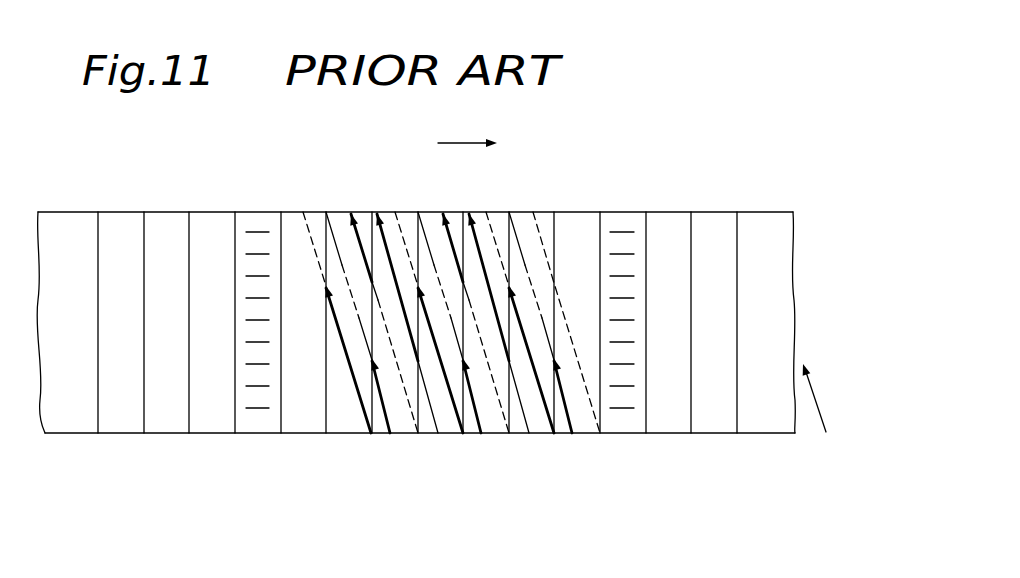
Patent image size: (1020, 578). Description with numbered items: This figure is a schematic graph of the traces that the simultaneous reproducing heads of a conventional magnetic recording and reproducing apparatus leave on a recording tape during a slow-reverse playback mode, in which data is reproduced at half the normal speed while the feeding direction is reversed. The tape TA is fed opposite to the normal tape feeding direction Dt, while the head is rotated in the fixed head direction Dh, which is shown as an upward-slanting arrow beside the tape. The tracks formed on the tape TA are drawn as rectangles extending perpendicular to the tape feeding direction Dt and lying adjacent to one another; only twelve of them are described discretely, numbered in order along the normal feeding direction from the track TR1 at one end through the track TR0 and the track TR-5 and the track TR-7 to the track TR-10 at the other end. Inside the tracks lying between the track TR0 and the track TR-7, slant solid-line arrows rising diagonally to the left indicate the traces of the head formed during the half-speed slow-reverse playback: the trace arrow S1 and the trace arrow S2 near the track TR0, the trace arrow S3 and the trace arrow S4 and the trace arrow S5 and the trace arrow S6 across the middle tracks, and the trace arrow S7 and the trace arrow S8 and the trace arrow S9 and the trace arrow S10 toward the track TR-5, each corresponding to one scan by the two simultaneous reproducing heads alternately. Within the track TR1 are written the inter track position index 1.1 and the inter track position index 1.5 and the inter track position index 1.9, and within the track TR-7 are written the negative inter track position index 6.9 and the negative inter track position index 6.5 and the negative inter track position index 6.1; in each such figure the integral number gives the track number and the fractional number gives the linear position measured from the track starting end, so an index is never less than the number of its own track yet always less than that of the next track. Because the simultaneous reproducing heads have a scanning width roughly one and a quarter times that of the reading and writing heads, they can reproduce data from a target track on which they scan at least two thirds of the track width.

The tape TA is at (743, 205).
The tape feeding direction Dt is at (467, 126).
The head rotation direction Dh is at (831, 398).
The track -10 TR-10 is at (117, 434).
The track -7 TR-7 is at (252, 432).
The track -5 TR-5 is at (318, 434).
The track 0 TR0 is at (573, 235).
The track 1 TR1 is at (626, 410).
The inter track position index 6.1 is at (257, 224).
The inter track position index 6.5 is at (250, 315).
The inter track position index 6.9 is at (220, 433).
The inter track position index 1.9 is at (628, 228).
The inter track position index 1.5 is at (628, 318).
The inter track position index 1.1 is at (636, 408).
The trace arrow S1 is at (574, 434).
The trace arrow S2 is at (551, 420).
The trace arrow S3 is at (472, 222).
The trace arrow S4 is at (446, 224).
The trace arrow S5 is at (483, 418).
The trace arrow S6 is at (457, 410).
The trace arrow S7 is at (378, 224).
The trace arrow S8 is at (352, 222).
The trace arrow S9 is at (397, 413).
The trace arrow S10 is at (362, 403).